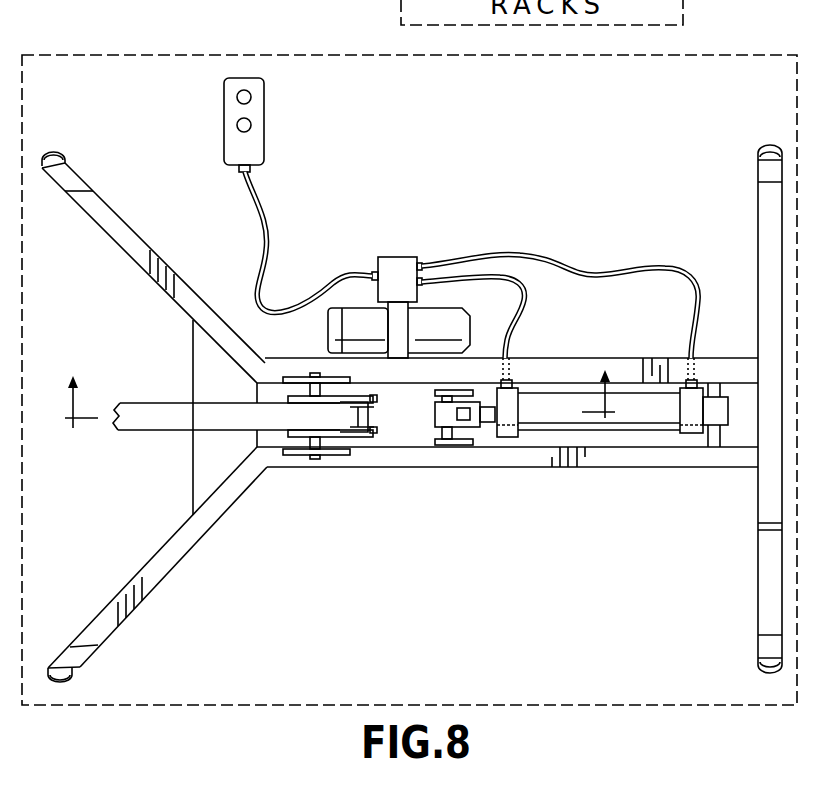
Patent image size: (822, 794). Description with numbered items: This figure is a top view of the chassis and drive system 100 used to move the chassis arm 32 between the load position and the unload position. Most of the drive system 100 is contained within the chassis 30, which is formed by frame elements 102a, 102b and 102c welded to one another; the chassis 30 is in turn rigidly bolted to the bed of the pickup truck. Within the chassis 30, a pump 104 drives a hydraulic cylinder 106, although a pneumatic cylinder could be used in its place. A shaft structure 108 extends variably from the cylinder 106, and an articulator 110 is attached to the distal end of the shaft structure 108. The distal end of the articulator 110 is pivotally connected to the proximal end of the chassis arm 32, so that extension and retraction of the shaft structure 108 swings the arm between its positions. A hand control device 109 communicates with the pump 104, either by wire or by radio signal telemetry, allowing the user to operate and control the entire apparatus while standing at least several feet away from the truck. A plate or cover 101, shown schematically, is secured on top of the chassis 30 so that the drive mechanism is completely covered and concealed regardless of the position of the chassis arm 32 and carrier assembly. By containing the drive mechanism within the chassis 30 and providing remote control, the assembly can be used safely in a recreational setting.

The plate or cover 101 is at (90, 52).
The frame element 102a is at (190, 194).
The frame element 102b is at (157, 590).
The frame element 102c is at (758, 557).
The chassis 30 is at (317, 470).
The chassis arm 32 is at (143, 405).
The drive system 100 is at (298, 338).
The pump 104 is at (448, 308).
The hydraulic cylinder 106 is at (665, 432).
The shaft structure 108 is at (485, 423).
The control device 109 is at (265, 120).
The articulator 110 is at (398, 423).